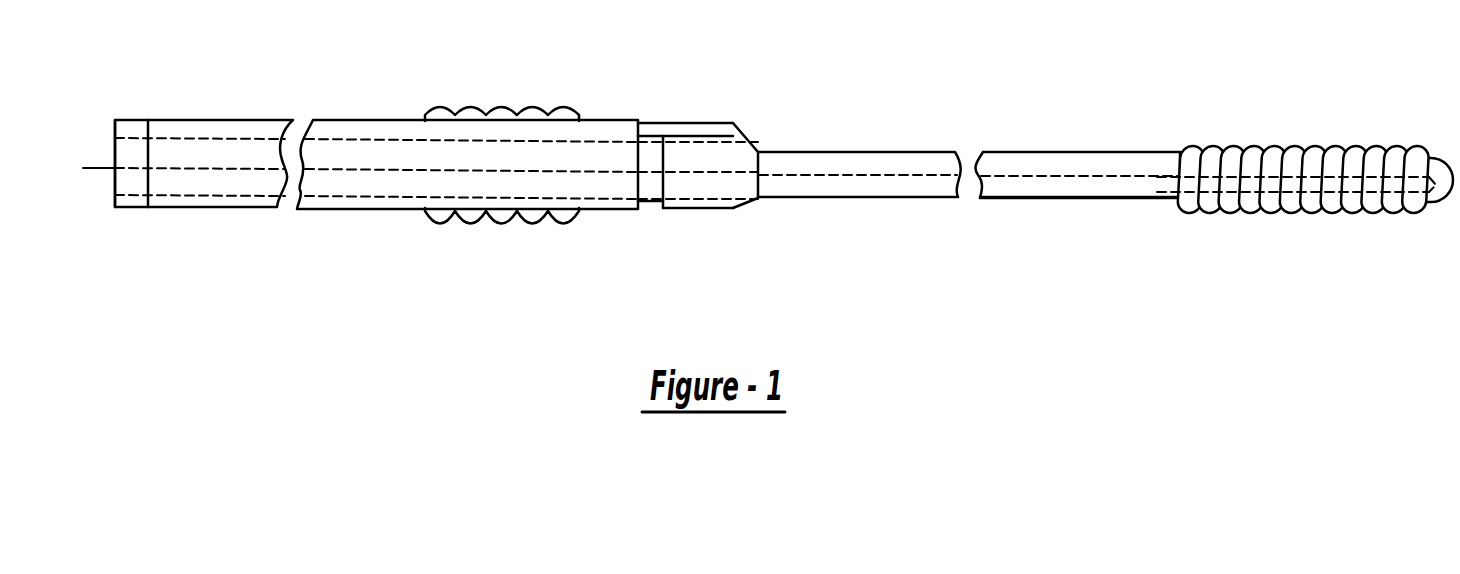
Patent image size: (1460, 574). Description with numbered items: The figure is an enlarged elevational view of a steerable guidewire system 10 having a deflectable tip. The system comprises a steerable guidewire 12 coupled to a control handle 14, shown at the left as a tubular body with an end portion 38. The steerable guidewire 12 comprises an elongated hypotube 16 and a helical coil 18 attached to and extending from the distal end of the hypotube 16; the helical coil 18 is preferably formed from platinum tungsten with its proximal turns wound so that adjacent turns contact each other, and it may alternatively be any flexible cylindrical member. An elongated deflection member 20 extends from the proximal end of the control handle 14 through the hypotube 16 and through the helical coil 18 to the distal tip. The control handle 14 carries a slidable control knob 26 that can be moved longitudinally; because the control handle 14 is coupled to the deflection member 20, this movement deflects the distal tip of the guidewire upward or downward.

The steerable guidewire system 10 is at (768, 208).
The steerable guidewire 12 is at (920, 198).
The control handle 14 is at (365, 208).
The elongated hypotube 16 is at (942, 152).
The helical coil 18 is at (1277, 146).
The deflection member 20 is at (823, 175).
The slidable control knob 26 is at (537, 108).
The end cap 38 is at (187, 120).